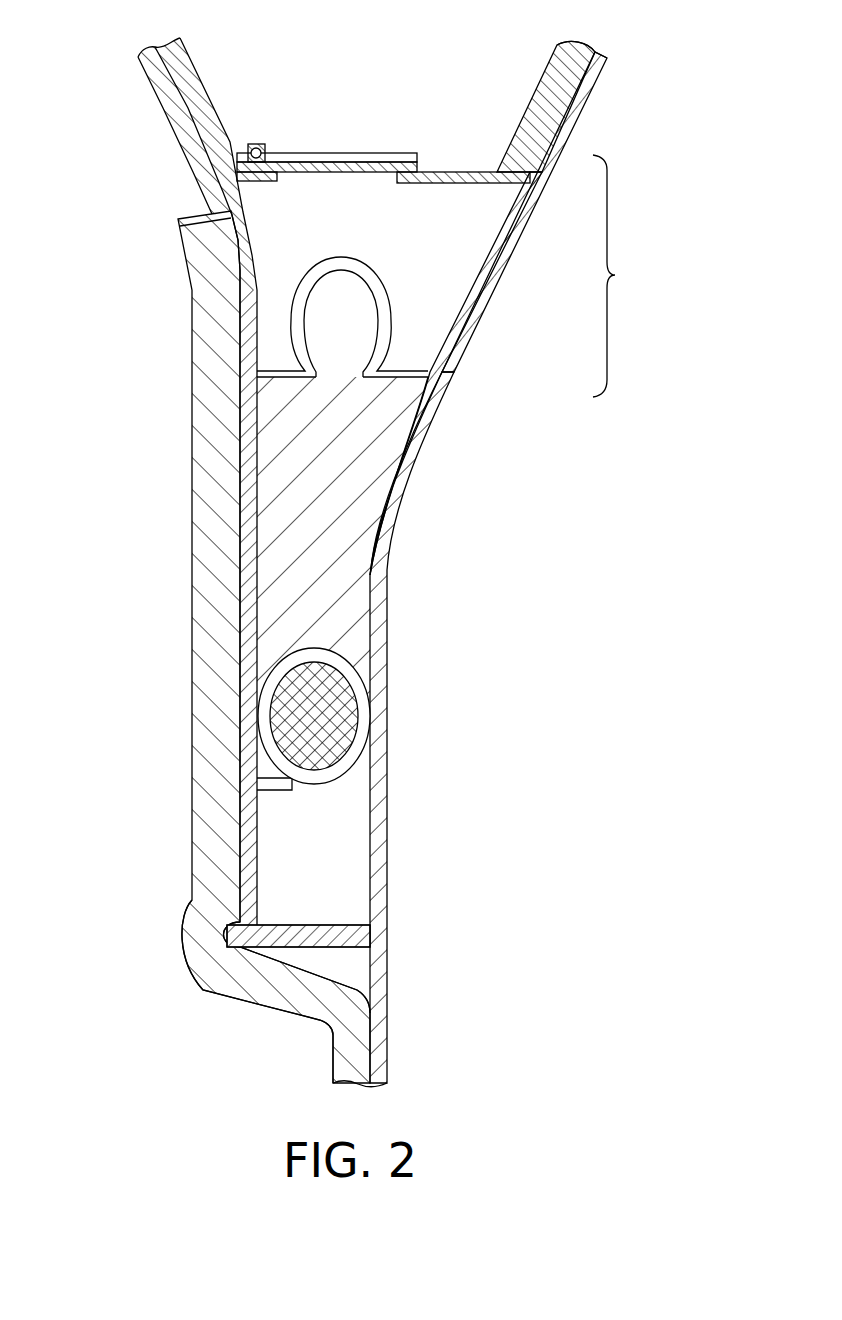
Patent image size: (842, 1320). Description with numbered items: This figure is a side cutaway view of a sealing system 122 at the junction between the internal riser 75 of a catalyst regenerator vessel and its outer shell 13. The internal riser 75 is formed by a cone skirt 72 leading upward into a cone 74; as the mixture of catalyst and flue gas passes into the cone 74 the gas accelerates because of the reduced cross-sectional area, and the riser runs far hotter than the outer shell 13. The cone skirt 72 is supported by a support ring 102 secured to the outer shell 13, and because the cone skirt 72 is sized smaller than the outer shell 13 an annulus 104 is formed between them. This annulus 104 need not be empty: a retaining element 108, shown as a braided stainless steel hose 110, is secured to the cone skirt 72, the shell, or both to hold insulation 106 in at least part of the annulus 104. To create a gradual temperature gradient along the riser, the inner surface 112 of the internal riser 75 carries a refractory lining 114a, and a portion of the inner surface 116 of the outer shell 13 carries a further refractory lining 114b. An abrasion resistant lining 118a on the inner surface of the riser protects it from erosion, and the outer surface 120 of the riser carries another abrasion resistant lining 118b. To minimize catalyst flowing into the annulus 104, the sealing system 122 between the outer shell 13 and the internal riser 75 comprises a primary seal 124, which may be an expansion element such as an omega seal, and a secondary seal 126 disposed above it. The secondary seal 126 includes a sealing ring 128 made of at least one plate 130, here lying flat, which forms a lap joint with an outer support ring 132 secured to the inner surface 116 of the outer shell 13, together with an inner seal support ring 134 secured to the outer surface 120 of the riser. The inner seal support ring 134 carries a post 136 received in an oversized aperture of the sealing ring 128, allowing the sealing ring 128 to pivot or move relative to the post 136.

The outer shell 13 is at (387, 763).
The cone skirt 72 is at (240, 822).
The cone 74 is at (162, 64).
The internal riser 75 is at (120, 540).
The support ring 102 is at (227, 957).
The annulus 104 is at (283, 617).
The insulation 106 is at (353, 558).
The retaining element 108 is at (363, 721).
The braided stainless steel hose 110 is at (342, 690).
The inner surface 112 is at (195, 155).
The refractory lining 114a is at (190, 325).
The refractory lining 114b is at (540, 117).
The inner surface 116 is at (569, 46).
The abrasion resistant lining 118a is at (167, 110).
The abrasion resistant lining 118b is at (240, 36).
The outer surface 120 is at (372, 151).
The sealing system 122 is at (615, 275).
The primary seal 124 is at (379, 329).
The secondary seal 126 is at (378, 72).
The sealing ring 128 is at (305, 153).
The plate 130 is at (362, 162).
The outer support ring 132 is at (424, 183).
The inner seal support ring 134 is at (263, 185).
The post 136 is at (255, 144).